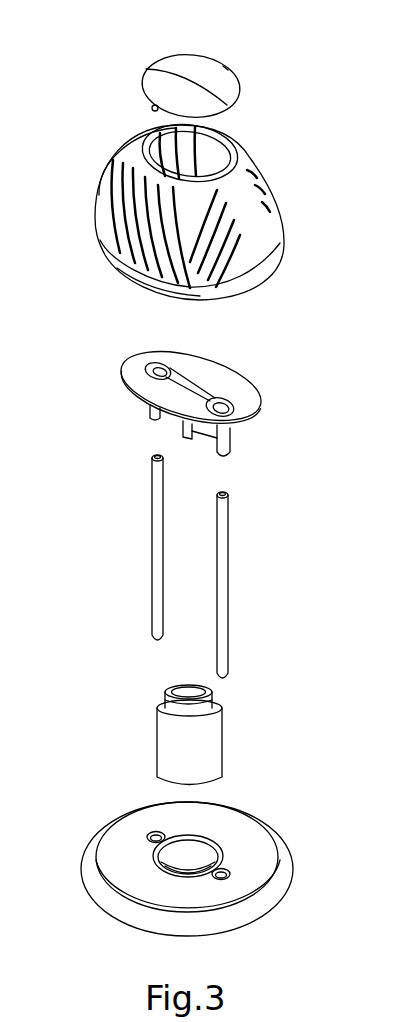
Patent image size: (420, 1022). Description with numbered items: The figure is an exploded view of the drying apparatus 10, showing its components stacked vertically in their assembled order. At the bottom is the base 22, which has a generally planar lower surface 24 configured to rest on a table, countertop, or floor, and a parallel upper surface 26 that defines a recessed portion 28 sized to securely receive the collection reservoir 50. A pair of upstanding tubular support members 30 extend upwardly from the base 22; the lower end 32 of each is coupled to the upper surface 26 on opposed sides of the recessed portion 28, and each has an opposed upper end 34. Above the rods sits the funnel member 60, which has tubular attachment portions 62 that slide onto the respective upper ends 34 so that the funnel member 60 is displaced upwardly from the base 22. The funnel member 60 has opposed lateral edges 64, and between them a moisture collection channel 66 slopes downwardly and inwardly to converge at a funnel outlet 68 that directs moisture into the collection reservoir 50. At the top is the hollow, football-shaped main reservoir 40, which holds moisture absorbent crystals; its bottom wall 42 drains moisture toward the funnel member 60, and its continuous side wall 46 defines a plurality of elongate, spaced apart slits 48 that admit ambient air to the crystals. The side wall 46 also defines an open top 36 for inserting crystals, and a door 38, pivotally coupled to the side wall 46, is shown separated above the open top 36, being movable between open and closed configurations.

The drying apparatus 10 is at (97, 128).
The base 22 is at (225, 871).
The lower surface 24 is at (105, 912).
The upper surface 26 is at (235, 837).
The recessed portion 28 is at (188, 848).
The support member 30 is at (195, 567).
The lower end 32 is at (158, 631).
The upper end 34 is at (152, 467).
The open top 36 is at (143, 155).
The door 38 is at (200, 70).
The main reservoir 40 is at (214, 232).
The bottom wall 42 is at (250, 294).
The side wall 46 is at (237, 187).
The slit 48 is at (220, 250).
The collection reservoir 50 is at (197, 755).
The funnel member 60 is at (208, 400).
The attachment portion 62 is at (223, 448).
The lateral edge 64 is at (125, 347).
The moisture collection channel 66 is at (160, 378).
The funnel outlet 68 is at (187, 433).